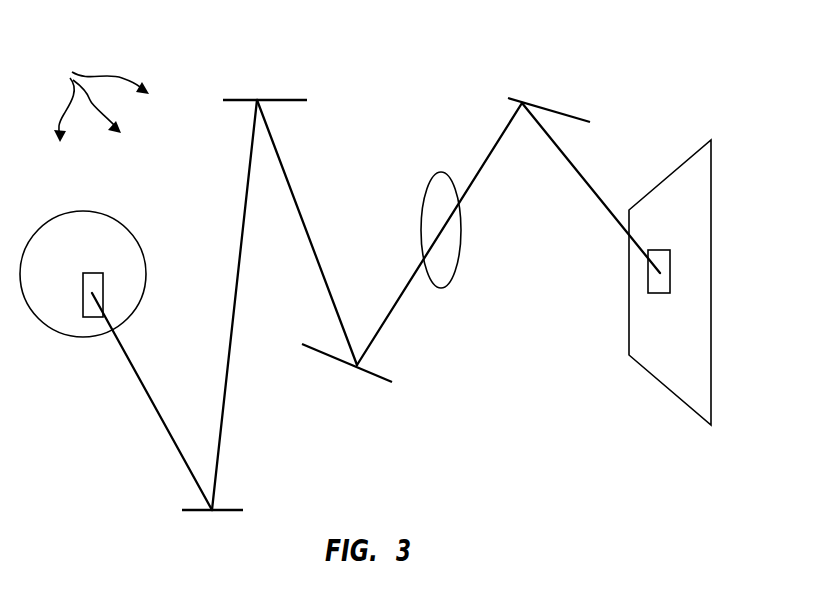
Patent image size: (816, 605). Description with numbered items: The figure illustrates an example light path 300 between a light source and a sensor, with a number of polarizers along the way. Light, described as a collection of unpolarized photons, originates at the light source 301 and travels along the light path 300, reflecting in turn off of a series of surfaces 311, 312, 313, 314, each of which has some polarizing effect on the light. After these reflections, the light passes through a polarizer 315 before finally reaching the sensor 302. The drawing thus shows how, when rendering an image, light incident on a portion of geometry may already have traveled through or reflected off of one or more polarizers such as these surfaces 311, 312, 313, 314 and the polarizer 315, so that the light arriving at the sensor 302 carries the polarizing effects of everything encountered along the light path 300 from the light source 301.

The light path 300 is at (95, 100).
The light source 301 is at (83, 294).
The sensor 302 is at (648, 285).
The surface 311 is at (212, 513).
The surface 312 is at (264, 99).
The surface 313 is at (351, 368).
The surface 314 is at (543, 107).
The polarizer 315 is at (463, 235).